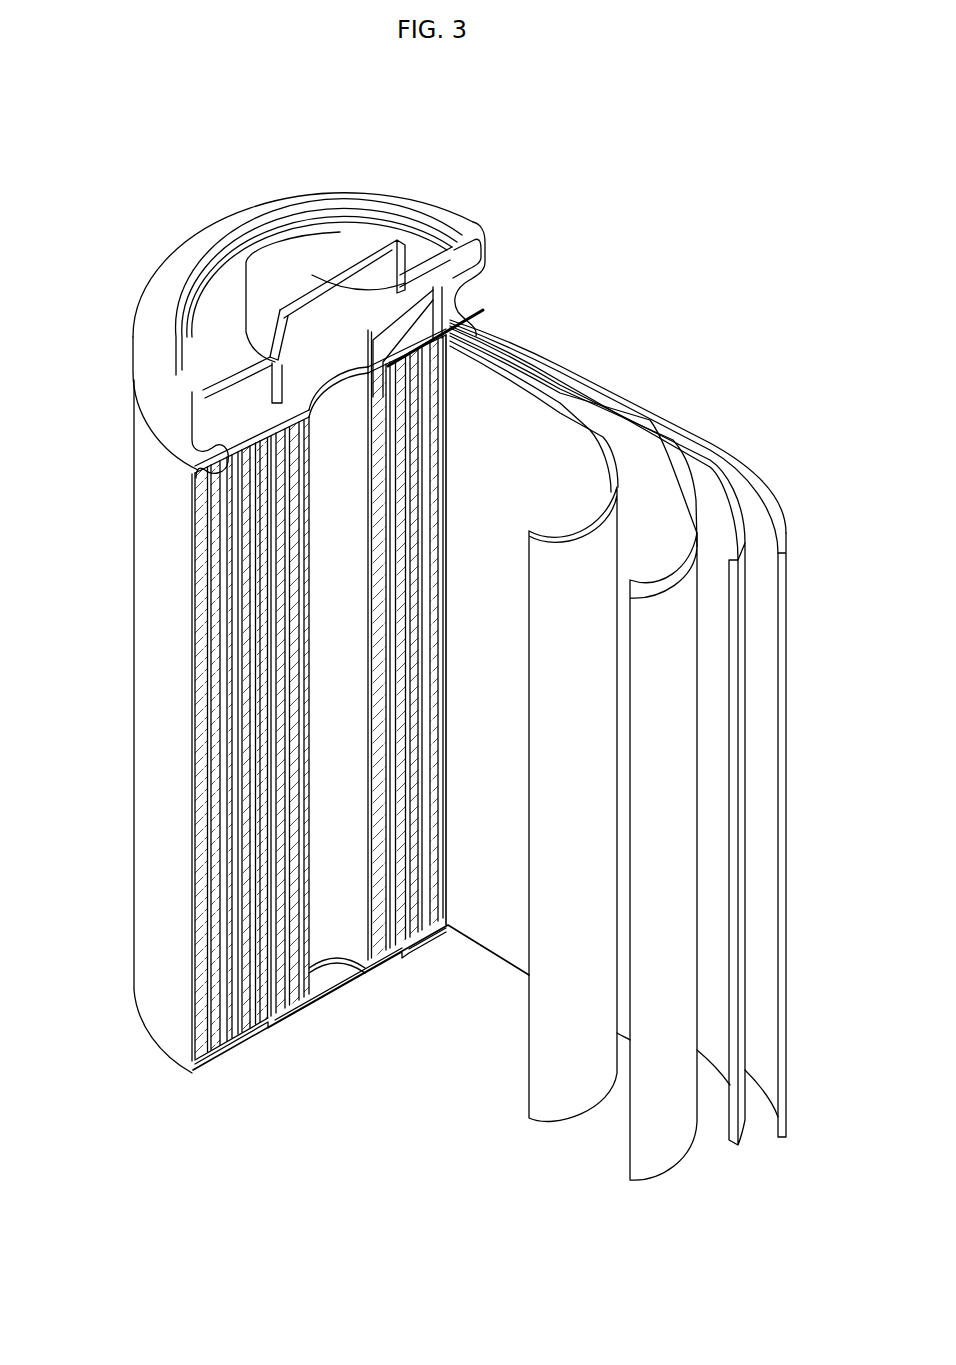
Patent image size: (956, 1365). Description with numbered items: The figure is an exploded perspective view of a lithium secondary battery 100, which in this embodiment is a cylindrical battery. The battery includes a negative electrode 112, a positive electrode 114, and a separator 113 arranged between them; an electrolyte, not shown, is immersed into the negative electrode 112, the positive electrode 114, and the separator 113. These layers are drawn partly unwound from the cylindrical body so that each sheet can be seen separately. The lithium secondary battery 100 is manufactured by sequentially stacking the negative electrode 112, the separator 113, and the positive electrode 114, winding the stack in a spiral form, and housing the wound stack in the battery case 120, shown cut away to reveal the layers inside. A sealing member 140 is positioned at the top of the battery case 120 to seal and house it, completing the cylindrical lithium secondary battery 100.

The lithium secondary battery 100 is at (478, 190).
The negative electrode 112 is at (750, 490).
The separator 113 is at (695, 462).
The positive electrode 114 is at (632, 453).
The battery case 120 is at (140, 680).
The sealing member 140 is at (293, 245).